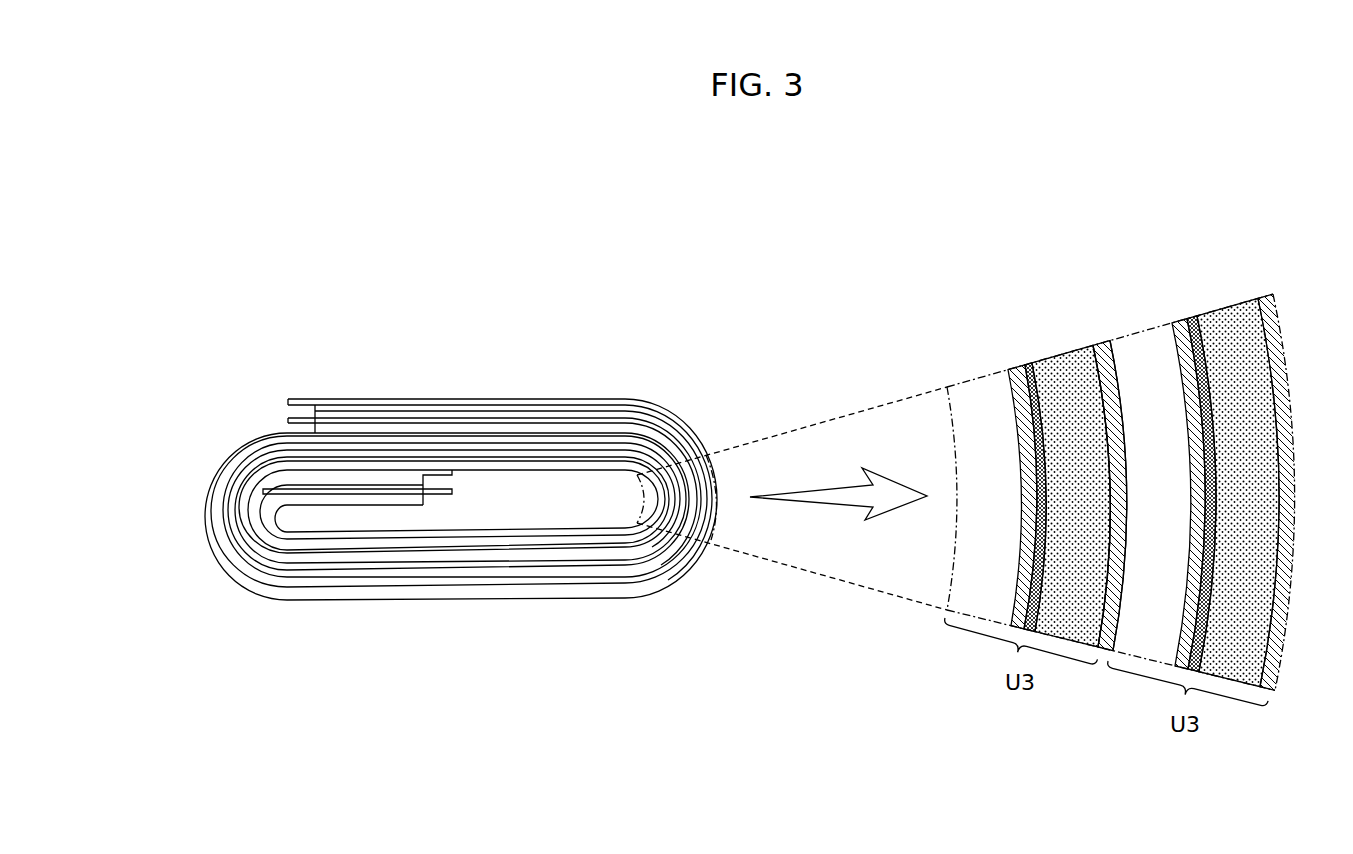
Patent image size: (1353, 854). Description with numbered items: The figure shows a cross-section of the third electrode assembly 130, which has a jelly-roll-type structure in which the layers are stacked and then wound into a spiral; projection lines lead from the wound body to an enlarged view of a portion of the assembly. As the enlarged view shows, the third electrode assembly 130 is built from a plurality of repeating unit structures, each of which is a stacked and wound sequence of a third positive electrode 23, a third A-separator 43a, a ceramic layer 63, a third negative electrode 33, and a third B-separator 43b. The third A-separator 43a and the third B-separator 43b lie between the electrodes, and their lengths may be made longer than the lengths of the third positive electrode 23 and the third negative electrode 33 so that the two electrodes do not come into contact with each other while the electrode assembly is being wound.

The third electrode assembly 130 is at (690, 352).
The third positive electrode 23 is at (566, 431).
The third negative electrode 33 is at (412, 411).
The third A-separator 43a is at (510, 423).
The third B-separator 43b is at (358, 399).
The ceramic layer 63 is at (462, 418).